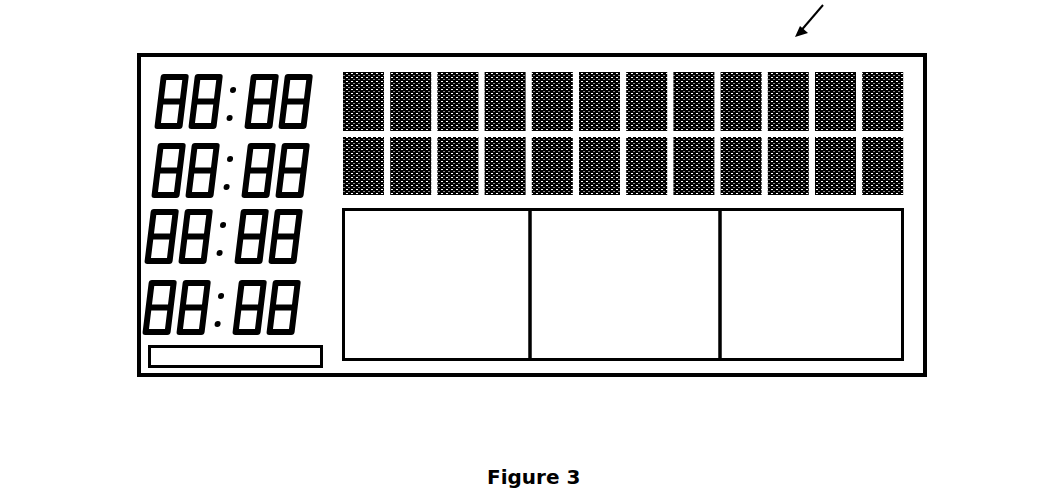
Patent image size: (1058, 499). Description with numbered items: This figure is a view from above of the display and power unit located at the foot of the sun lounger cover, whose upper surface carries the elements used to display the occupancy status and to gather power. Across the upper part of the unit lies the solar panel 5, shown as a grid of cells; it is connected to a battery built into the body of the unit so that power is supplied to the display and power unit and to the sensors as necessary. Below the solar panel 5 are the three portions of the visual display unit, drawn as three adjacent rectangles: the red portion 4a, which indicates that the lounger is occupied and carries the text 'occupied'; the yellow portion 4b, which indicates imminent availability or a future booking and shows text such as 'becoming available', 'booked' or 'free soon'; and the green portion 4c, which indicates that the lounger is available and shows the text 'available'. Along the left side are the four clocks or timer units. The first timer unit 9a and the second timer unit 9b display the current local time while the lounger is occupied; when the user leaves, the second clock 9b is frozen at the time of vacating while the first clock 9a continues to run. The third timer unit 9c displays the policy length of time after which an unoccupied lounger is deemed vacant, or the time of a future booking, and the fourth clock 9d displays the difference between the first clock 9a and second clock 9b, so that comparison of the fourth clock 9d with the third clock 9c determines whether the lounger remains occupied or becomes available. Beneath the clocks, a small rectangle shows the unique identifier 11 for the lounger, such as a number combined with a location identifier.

The first timer unit 9a is at (160, 100).
The second timer unit 9b is at (160, 165).
The third timer unit 9c is at (162, 230).
The fourth clock 9d is at (145, 305).
The unique identifier 11 is at (168, 358).
The solar panel 5 is at (853, 83).
The red display portion 4a is at (417, 330).
The yellow display portion 4b is at (630, 339).
The green display portion 4c is at (830, 337).